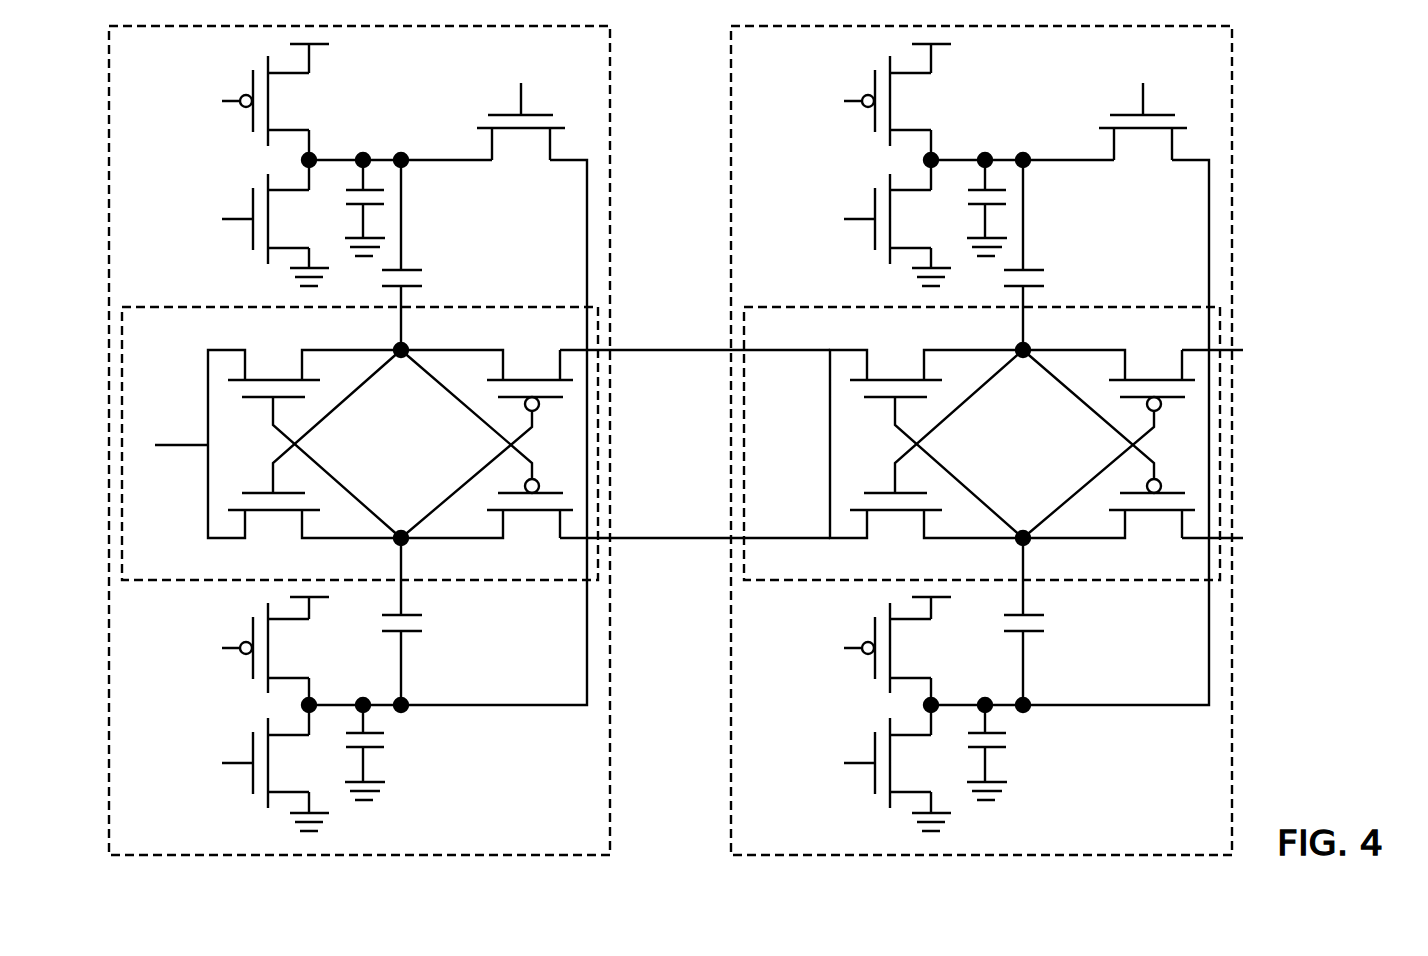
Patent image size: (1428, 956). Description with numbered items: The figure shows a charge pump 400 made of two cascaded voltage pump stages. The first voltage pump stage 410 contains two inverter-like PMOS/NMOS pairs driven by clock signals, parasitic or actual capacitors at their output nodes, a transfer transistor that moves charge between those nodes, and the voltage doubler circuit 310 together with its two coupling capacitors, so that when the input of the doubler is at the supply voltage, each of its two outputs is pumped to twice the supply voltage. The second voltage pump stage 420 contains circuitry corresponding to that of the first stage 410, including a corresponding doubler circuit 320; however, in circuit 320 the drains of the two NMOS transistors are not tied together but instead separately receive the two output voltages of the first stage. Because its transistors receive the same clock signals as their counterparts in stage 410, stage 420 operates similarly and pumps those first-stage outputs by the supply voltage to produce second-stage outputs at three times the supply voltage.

The charge pump circuit 400 is at (714, 439).
The first voltage pump stage 410 is at (359, 440).
The second voltage pump stage 420 is at (981, 440).
The voltage doubler circuit 310 is at (170, 338).
The second voltage doubler circuit 320 is at (982, 443).